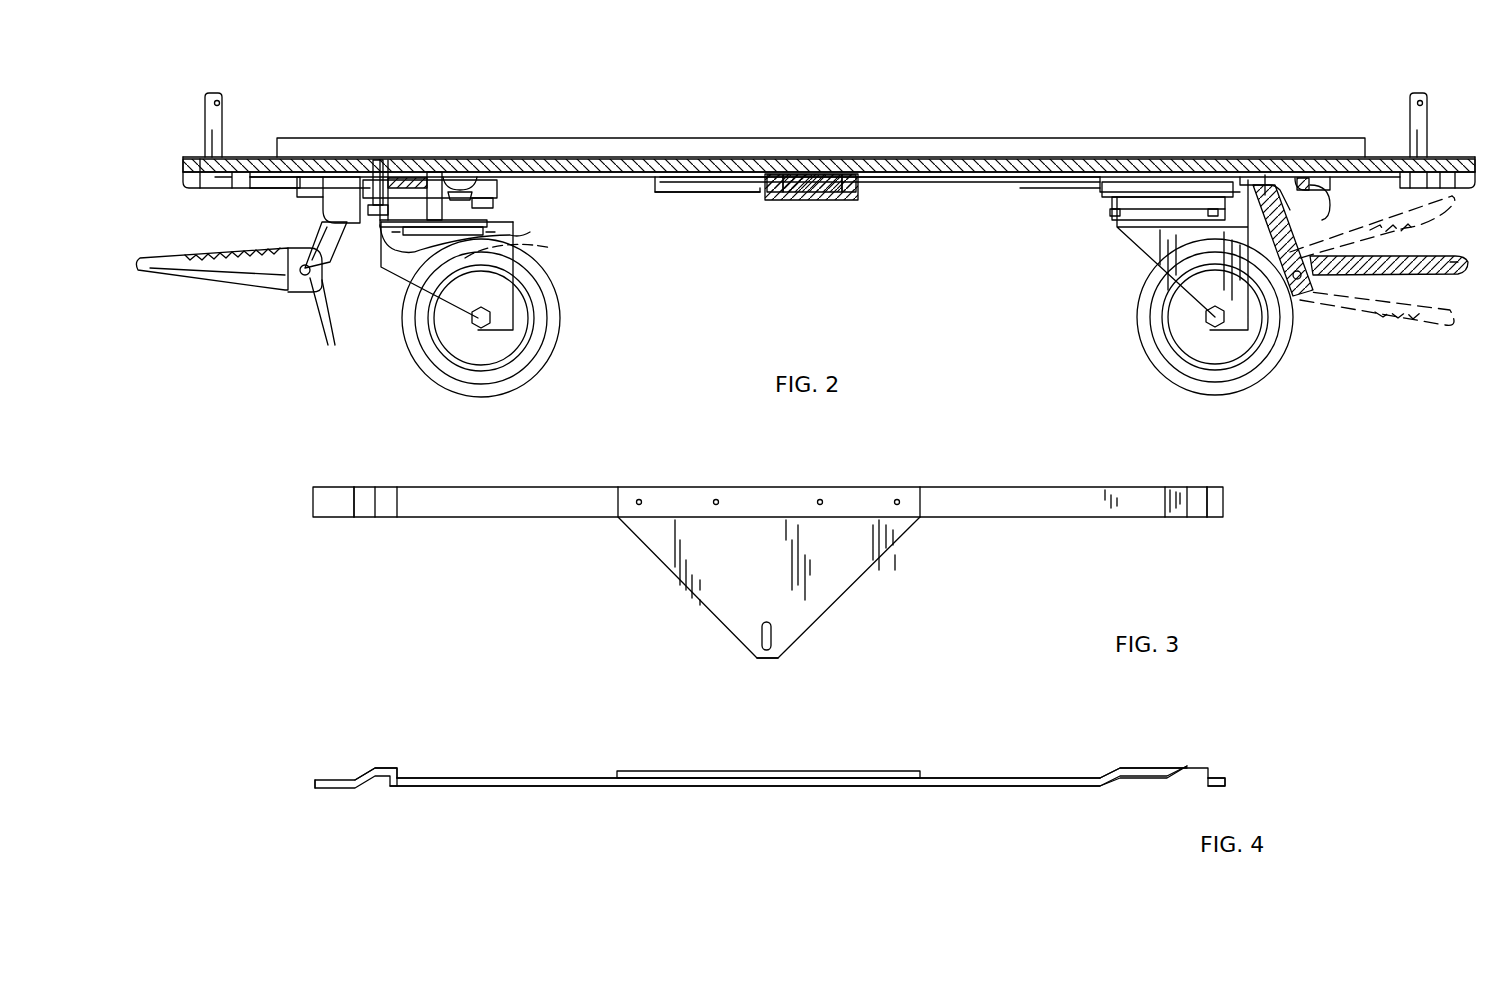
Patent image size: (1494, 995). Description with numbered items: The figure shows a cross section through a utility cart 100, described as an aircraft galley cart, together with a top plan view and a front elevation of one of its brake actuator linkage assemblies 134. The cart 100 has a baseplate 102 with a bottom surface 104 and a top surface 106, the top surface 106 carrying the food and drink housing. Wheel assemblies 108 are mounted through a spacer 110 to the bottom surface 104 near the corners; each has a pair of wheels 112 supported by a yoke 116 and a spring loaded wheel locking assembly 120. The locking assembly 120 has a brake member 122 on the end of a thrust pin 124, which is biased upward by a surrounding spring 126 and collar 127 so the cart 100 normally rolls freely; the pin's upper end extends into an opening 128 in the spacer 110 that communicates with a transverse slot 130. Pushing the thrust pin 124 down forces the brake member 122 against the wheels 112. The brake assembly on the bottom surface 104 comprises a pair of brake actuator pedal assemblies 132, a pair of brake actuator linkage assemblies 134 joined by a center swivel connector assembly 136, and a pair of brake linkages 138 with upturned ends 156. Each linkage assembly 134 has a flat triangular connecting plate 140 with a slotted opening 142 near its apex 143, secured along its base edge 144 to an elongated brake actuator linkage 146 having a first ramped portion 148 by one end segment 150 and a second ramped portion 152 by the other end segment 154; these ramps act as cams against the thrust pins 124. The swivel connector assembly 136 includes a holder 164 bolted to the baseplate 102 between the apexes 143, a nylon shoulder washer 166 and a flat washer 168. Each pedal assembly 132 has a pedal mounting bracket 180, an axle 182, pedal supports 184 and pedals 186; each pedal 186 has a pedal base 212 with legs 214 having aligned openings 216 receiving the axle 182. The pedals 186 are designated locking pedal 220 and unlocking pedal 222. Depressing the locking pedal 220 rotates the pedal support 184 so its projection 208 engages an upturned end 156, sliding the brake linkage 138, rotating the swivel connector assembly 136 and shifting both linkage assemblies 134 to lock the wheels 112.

In FIG. 2, the utility cart 100 is at (811, 226).
In FIG. 2, the baseplate 102 is at (1473, 158).
In FIG. 2, the bottom surface 104 is at (655, 182).
In FIG. 2, the top surface 106 is at (688, 165).
In FIG. 2, the wheel assembly 108 is at (526, 313).
In FIG. 2, the spacer 110 is at (1218, 182).
In FIG. 2, the wheels 112 is at (555, 372).
In FIG. 2, the yoke 116 is at (505, 258).
In FIG. 2, the wheel locking assembly 120 is at (490, 225).
In FIG. 2, the brake member 122 is at (423, 168).
In FIG. 2, the thrust pin 124 is at (435, 175).
In FIG. 2, the spring 126 is at (413, 178).
In FIG. 2, the collar 127 is at (522, 232).
In FIG. 2, the opening 128 is at (413, 160).
In FIG. 2, the slot 130 is at (472, 195).
In FIG. 2, the brake actuator pedal assembly 132 is at (1298, 175).
In FIG. 2, the brake actuator linkage assembly 134 is at (528, 165).
In FIG. 3, the brake actuator linkage assembly 134 is at (786, 547).
In FIG. 4, the brake actuator linkage assembly 134 is at (784, 779).
In FIG. 2, the center swivel connector assembly 136 is at (813, 183).
In FIG. 2, the brake linkage 138 is at (1118, 160).
In FIG. 3, the connecting plate 140 is at (809, 577).
In FIG. 4, the connecting plate 140 is at (870, 770).
In FIG. 3, the slotted opening 142 is at (775, 648).
In FIG. 3, the apex 143 is at (768, 657).
In FIG. 3, the base edge 144 is at (897, 499).
In FIG. 2, the brake actuator linkage 146 is at (660, 190).
In FIG. 3, the brake actuator linkage 146 is at (1018, 488).
In FIG. 4, the brake actuator linkage 146 is at (585, 788).
In FIG. 2, the first ramped portion 148 is at (458, 180).
In FIG. 3, the first ramped portion 148 is at (365, 495).
In FIG. 4, the first ramped portion 148 is at (362, 770).
In FIG. 3, the end segment 150 is at (338, 503).
In FIG. 4, the end segment 150 is at (332, 790).
In FIG. 3, the second ramped portion 152 is at (1165, 495).
In FIG. 4, the second ramped portion 152 is at (1170, 772).
In FIG. 3, the end segment 154 is at (1220, 510).
In FIG. 4, the end segment 154 is at (1228, 782).
In FIG. 2, the upturned ends 156 is at (1290, 185).
In FIG. 2, the holder 164 is at (800, 200).
In FIG. 2, the shoulder washer 166 is at (850, 175).
In FIG. 2, the flat washer 168 is at (770, 190).
In FIG. 2, the pedal mounting bracket 180 is at (312, 197).
In FIG. 2, the axle 182 is at (1370, 272).
In FIG. 2, the pedal support 184 is at (305, 280).
In FIG. 2, the pedal 186 is at (272, 282).
In FIG. 2, the projection 208 is at (1267, 185).
In FIG. 2, the pedal base 212 is at (263, 311).
In FIG. 2, the legs 214 is at (304, 255).
In FIG. 2, the openings 216 is at (305, 292).
In FIG. 2, the locking pedal 220 is at (222, 278).
In FIG. 2, the unlocking pedal 222 is at (1415, 235).